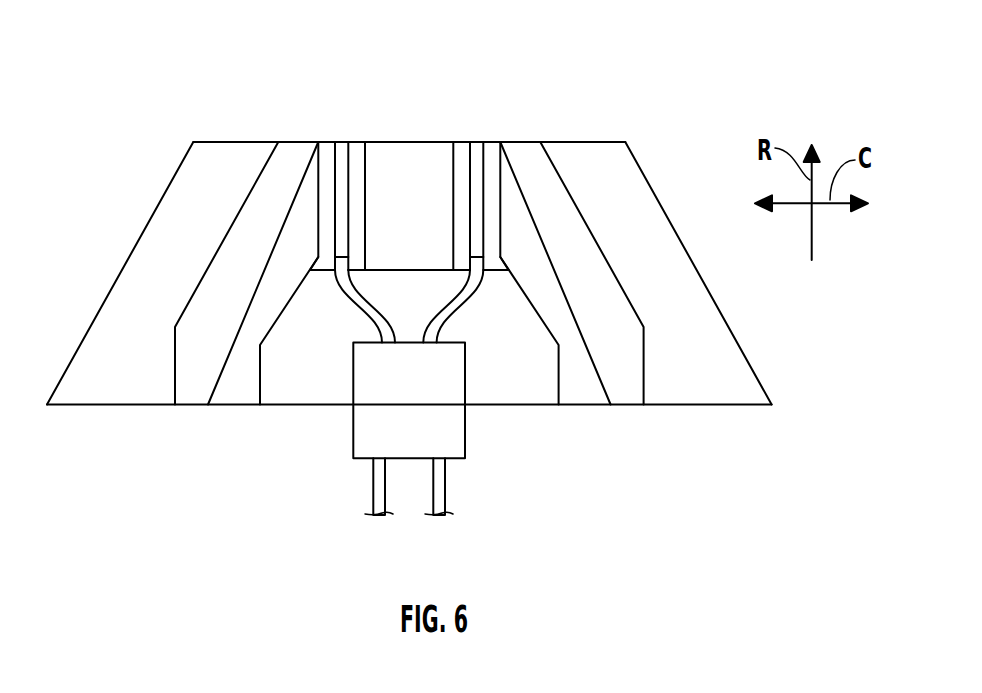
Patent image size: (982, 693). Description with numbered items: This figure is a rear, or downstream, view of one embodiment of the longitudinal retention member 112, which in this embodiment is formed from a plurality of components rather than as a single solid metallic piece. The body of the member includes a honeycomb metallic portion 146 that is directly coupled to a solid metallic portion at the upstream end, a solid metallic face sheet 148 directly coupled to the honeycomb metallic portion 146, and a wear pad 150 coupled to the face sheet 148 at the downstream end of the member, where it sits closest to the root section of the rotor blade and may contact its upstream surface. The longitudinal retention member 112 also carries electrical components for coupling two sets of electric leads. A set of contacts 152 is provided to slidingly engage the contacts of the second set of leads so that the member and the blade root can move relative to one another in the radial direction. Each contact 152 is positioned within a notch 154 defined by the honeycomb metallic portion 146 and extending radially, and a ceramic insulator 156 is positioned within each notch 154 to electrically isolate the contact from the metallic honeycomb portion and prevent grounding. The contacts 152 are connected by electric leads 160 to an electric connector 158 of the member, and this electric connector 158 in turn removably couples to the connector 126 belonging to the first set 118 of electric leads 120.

The longitudinal retention member 112 is at (105, 93).
The first set of electric leads 118 is at (339, 555).
The electric leads 120 is at (373, 493).
The connector 126 is at (353, 437).
The honeycomb metallic portion 146 is at (115, 383).
The solid metallic face sheet 148 is at (197, 383).
The wear pad 150 is at (243, 383).
The set of contacts 152 is at (340, 150).
The notch 154 is at (328, 131).
The ceramic insulator 156 is at (357, 235).
The electric connector 158 is at (465, 378).
The electric leads 160 is at (352, 302).